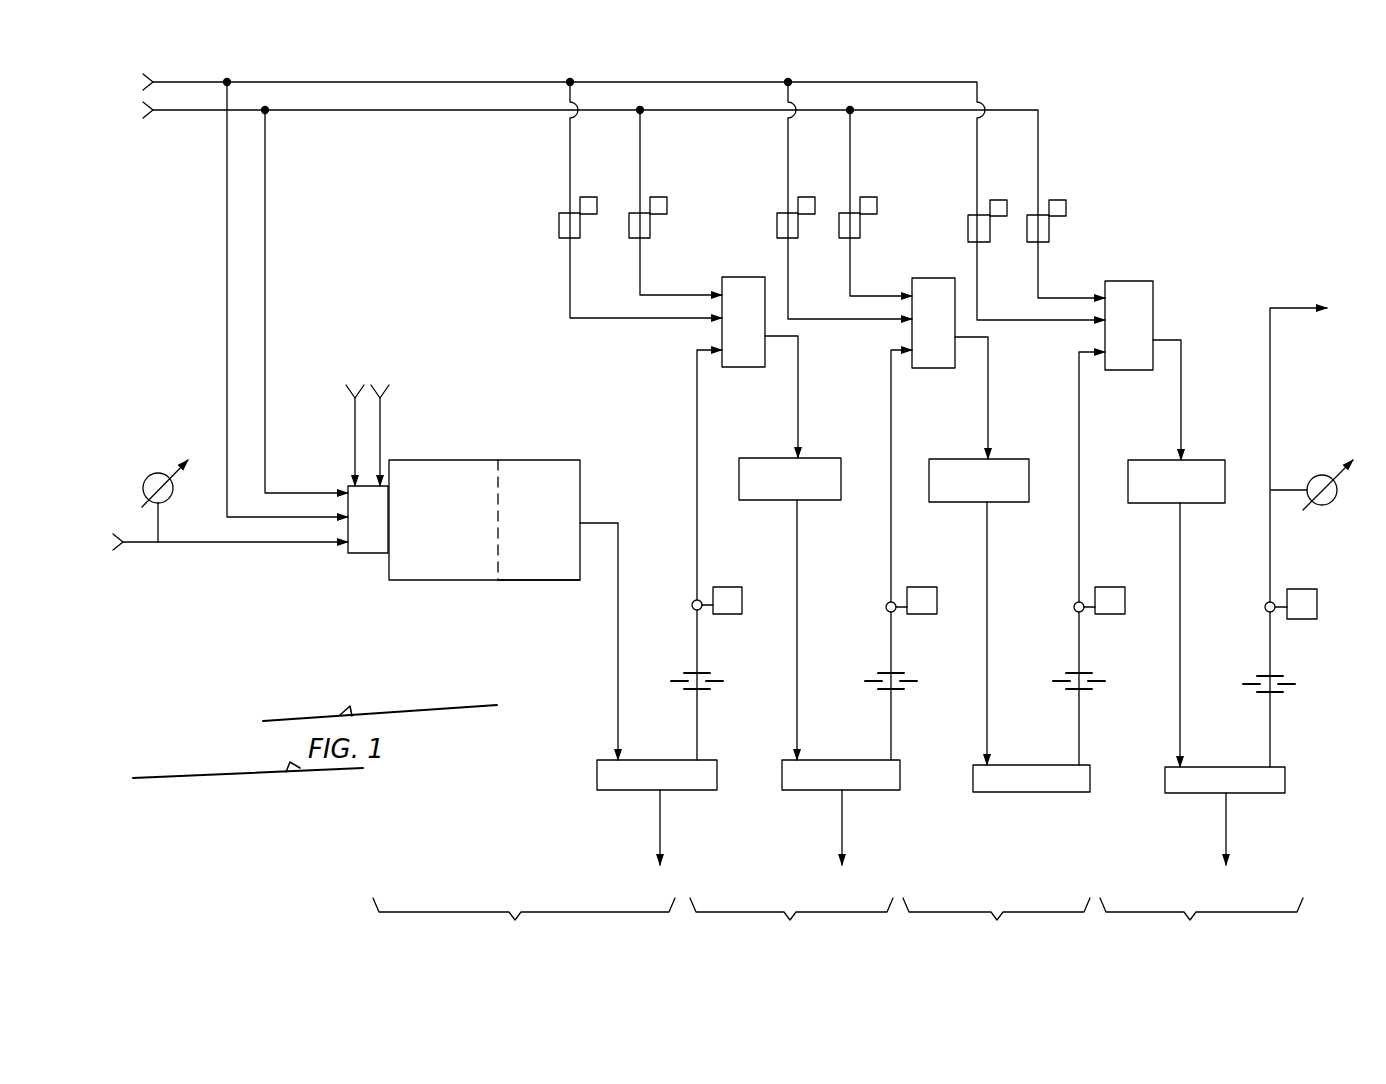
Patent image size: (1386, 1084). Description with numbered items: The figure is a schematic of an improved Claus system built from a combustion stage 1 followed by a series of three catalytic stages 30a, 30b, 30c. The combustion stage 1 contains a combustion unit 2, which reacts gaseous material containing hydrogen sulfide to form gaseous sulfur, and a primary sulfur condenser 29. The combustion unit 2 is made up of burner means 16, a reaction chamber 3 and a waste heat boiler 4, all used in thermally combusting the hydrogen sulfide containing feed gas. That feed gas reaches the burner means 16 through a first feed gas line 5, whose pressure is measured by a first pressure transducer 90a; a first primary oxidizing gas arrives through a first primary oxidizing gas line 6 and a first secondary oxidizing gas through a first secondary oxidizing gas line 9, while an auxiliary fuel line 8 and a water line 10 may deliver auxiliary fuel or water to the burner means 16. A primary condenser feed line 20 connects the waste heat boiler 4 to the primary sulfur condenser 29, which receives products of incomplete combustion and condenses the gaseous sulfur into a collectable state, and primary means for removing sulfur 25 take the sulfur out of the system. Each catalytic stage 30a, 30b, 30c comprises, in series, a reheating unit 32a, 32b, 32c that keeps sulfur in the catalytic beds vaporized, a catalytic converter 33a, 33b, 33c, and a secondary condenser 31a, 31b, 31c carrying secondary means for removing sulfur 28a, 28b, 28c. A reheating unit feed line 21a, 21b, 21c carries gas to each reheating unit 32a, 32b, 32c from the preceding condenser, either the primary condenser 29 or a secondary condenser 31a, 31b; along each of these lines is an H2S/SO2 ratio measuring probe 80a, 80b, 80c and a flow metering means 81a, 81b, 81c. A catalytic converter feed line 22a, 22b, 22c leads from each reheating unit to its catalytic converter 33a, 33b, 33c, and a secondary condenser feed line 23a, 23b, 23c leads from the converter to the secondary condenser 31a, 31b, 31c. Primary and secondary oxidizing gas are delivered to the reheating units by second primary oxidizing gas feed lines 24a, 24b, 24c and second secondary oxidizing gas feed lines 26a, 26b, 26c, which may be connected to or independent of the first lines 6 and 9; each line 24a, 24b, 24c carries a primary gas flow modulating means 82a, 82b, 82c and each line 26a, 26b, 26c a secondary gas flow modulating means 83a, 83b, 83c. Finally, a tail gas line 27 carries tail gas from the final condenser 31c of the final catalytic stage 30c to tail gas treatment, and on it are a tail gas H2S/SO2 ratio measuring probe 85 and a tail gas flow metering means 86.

The combustion stage 1 is at (524, 928).
The combustion unit 2 is at (520, 460).
The reaction chamber 3 is at (440, 580).
The waste heat boiler 4 is at (540, 580).
The first feed gas line 5 is at (220, 545).
The first primary oxidizing gas line 6 is at (167, 84).
The auxiliary fuel line 8 is at (355, 408).
The first secondary oxidizing gas line 9 is at (200, 112).
The water line 10 is at (380, 432).
The burner means 16 is at (365, 560).
The primary condenser feed line 20 is at (618, 640).
The reheating unit feed line 21a is at (697, 386).
The reheating unit feed line 21b is at (891, 386).
The reheating unit feed line 21c is at (1079, 388).
The catalytic converter feed line 22a is at (798, 382).
The catalytic converter feed line 22b is at (988, 380).
The catalytic converter feed line 22c is at (1181, 408).
The secondary condenser feed line 23a is at (797, 592).
The secondary condenser feed line 23b is at (987, 592).
The secondary condenser feed line 23c is at (1180, 596).
The second primary oxidizing gas feed line 24a is at (570, 140).
The second primary oxidizing gas feed line 24b is at (788, 142).
The second primary oxidizing gas feed line 24c is at (977, 160).
The primary means for removing sulfur 25 is at (660, 840).
The second secondary oxidizing gas feed line 26a is at (640, 146).
The second secondary oxidizing gas feed line 26b is at (850, 148).
The second secondary oxidizing gas feed line 26c is at (1038, 172).
The tail gas line 27 is at (1270, 410).
The secondary means for removing sulfur 28a is at (842, 842).
The secondary means for removing sulfur 28b is at (1029, 842).
The secondary means for removing sulfur 28c is at (1226, 842).
The primary sulfur condenser 29 is at (603, 790).
The catalytic stage 30a is at (791, 928).
The catalytic stage 30b is at (996, 928).
The catalytic stage 30c is at (1201, 928).
The secondary condenser 31a is at (804, 790).
The secondary condenser 31b is at (1002, 792).
The secondary condenser 31c is at (1194, 793).
The reheating unit 32a is at (745, 367).
The reheating unit 32b is at (937, 368).
The reheating unit 32c is at (1128, 370).
The catalytic converter 33a is at (765, 500).
The catalytic converter 33b is at (958, 502).
The catalytic converter 33c is at (1152, 503).
The H2S/SO2 ratio measuring probe 80a is at (728, 614).
The H2S/SO2 ratio measuring probe 80b is at (922, 614).
The H2S/SO2 ratio measuring probe 80c is at (1110, 614).
The flow metering means 81a is at (690, 672).
The flow metering means 81b is at (884, 672).
The flow metering means 81c is at (1072, 672).
The primary gas flow modulating means 82a is at (559, 232).
The primary gas flow modulating means 82b is at (777, 230).
The primary gas flow modulating means 82c is at (968, 232).
The secondary gas flow modulating means 83a is at (667, 206).
The secondary gas flow modulating means 83b is at (877, 206).
The secondary gas flow modulating means 83c is at (1066, 208).
The tail gas H2S/SO2 ratio measuring probe 85 is at (1310, 619).
The tail gas flow metering means 86 is at (1262, 676).
The first pressure transducer 90a is at (148, 480).